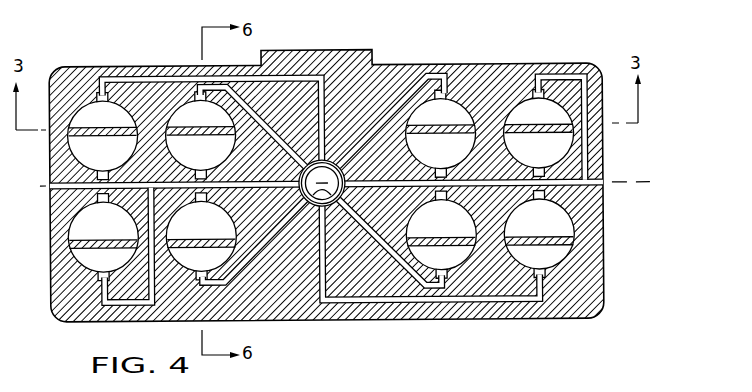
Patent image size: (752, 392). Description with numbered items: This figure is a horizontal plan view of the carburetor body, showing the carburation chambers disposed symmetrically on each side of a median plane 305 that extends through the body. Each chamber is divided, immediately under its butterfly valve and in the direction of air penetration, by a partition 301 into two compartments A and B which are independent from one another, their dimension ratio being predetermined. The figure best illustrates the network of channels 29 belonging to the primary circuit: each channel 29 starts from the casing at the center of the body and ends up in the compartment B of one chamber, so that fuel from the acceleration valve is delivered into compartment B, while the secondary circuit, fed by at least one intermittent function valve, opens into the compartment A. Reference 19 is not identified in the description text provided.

The central bore 19 is at (338, 162).
The channel 29 is at (318, 76).
The partition 301 is at (182, 125).
The median plane 305 is at (639, 181).
The compartment A is at (190, 144).
The compartment B is at (95, 117).